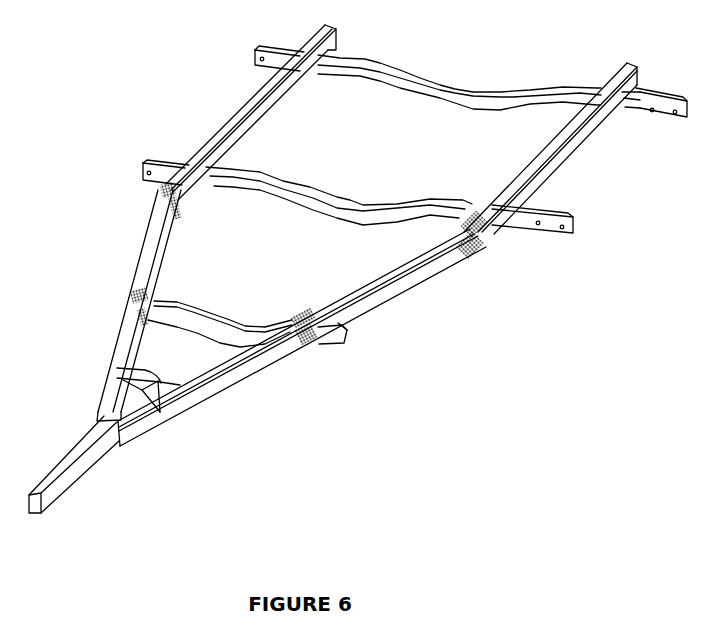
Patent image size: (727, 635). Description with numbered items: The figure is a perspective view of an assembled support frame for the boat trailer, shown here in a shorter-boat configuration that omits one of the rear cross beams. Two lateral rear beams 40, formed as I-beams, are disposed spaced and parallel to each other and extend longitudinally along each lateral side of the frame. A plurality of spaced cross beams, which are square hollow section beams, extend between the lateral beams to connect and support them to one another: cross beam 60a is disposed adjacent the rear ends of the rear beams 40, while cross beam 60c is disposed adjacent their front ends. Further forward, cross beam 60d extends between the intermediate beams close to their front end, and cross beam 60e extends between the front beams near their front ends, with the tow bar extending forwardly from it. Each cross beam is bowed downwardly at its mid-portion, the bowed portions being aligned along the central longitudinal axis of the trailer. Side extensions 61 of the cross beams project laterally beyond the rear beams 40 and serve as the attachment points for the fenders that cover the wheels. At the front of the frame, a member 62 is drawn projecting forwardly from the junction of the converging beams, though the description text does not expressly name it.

The lateral rear beam 40 is at (258, 112).
The side extension 61 is at (268, 49).
The cross beam 60a is at (425, 95).
The cross beam 60c is at (330, 188).
The cross beam 60d is at (182, 309).
The cross beam 60e is at (143, 373).
The tongue bar 62 is at (73, 478).